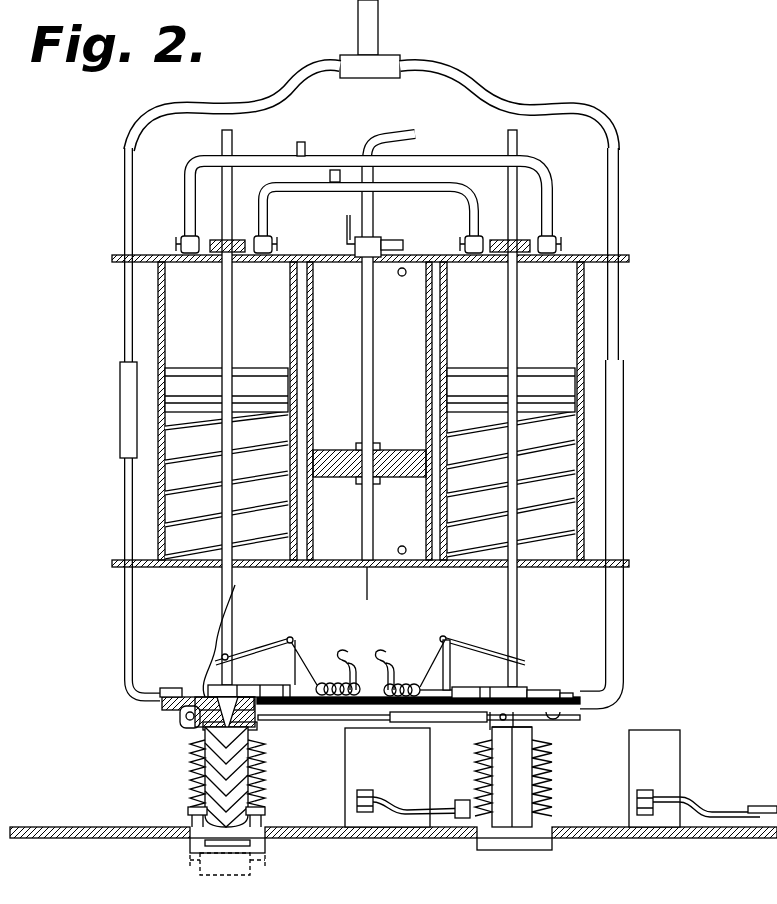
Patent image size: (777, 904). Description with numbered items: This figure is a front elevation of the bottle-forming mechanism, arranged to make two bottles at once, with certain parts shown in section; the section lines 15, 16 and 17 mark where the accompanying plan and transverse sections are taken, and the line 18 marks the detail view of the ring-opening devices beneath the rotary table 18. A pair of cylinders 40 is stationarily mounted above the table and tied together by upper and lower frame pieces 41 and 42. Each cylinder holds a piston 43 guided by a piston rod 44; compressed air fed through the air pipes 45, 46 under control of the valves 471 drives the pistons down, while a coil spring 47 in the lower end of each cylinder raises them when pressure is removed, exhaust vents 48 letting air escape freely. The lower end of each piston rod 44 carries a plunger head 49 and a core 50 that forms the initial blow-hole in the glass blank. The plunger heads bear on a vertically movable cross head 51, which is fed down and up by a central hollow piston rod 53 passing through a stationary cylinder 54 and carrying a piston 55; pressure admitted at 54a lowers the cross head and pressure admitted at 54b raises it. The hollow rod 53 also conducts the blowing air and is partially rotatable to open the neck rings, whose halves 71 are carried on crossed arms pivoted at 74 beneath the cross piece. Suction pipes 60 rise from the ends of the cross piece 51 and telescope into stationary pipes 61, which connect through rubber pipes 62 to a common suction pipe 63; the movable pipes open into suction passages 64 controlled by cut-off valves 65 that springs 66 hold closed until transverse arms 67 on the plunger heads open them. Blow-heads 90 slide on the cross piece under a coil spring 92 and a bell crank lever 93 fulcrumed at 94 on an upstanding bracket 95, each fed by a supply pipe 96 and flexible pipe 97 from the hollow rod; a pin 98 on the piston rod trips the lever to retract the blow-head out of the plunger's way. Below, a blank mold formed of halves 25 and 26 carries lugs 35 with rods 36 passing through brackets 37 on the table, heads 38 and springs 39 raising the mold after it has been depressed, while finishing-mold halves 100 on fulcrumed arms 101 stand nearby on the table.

The section line 15— 15 is at (720, 130).
The section line 16— 16 is at (705, 433).
The section line 17— 17 is at (684, 605).
The rotary table 18 is at (700, 712).
The blank mold half 25 is at (505, 822).
The blank mold half 26 is at (520, 818).
The ears or lugs 35 is at (165, 842).
The rods 36 is at (206, 758).
The brackets 37 is at (194, 812).
The heads or enlargements 38 is at (252, 752).
The coil springs 39 is at (266, 759).
The cylinders 40 is at (158, 331).
The upper frame piece 41 is at (418, 256).
The lower frame piece 42 is at (337, 557).
The piston 43 is at (254, 372).
The piston rods 44 is at (222, 311).
The air pipe 45 is at (266, 206).
The air pipe 46 is at (188, 196).
The coil spring 47 is at (190, 481).
The valves 471 is at (172, 238).
The exhaust vents 48 is at (215, 570).
The core or plunger head 49 is at (228, 660).
The core 50 is at (181, 787).
The cross head 51 is at (450, 720).
The hollow piston rod 53 is at (371, 591).
The stationary cylinder 54 is at (414, 402).
The pressure inlet above piston 54a is at (402, 276).
The pressure inlet below piston 54b is at (402, 546).
The piston 55 is at (330, 458).
The suction pipes 60 is at (124, 656).
The suction pipes 61 is at (124, 182).
The rubber suction pipes 62 is at (283, 100).
The common suction pipe 63 is at (378, 24).
The suction passages 64 is at (176, 688).
The cut-off valves 65 is at (165, 711).
The springs 66 is at (180, 760).
The transverse arms 67 is at (241, 638).
The neck ring halves 71 is at (520, 722).
The pivot 74 is at (387, 777).
The blow-heads 90 is at (272, 686).
The coil spring 92 is at (405, 722).
The bell crank lever 93 is at (468, 658).
The fulcrum 94 is at (432, 665).
The upstanding arm or bracket 95 is at (450, 673).
The supply pipe 96 is at (432, 688).
The flexible pipe 97 is at (378, 653).
The pin 98 is at (266, 648).
The mold halves 100 is at (364, 818).
The arm 101 is at (418, 820).